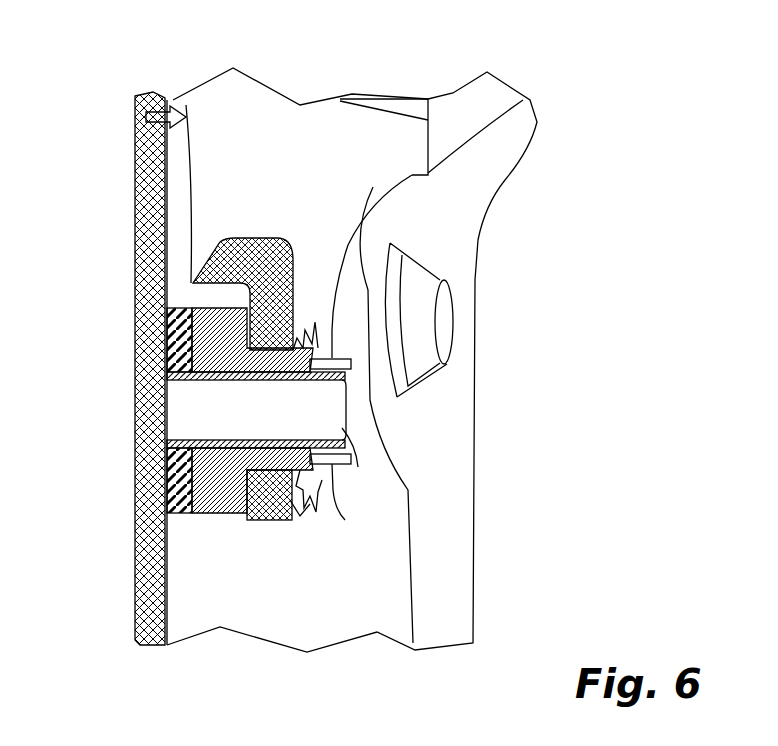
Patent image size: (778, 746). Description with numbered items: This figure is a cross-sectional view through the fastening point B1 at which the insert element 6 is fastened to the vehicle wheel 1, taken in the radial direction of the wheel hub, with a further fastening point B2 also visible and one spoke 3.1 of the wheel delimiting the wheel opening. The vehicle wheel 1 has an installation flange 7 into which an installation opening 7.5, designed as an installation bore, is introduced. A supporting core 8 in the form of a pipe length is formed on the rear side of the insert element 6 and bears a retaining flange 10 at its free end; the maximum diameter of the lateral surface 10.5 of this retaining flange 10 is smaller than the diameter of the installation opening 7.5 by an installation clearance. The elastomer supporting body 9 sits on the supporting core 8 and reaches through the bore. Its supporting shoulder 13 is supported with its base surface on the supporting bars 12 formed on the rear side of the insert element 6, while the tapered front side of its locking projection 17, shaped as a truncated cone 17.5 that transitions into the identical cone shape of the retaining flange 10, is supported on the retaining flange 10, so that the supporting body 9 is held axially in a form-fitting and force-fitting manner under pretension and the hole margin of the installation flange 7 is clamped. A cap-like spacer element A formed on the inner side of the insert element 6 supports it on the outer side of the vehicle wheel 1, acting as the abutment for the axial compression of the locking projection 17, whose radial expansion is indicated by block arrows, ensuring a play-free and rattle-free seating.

The vehicle wheel 1 is at (536, 80).
The insert element 6 is at (126, 296).
The supporting bars 12 is at (181, 305).
The supporting shoulder 13 is at (208, 516).
The locking projection 17 is at (296, 330).
The retaining flange 10 is at (319, 348).
The truncated cone 17.5 is at (428, 258).
The fastening point B2 is at (446, 283).
The spoke 3.1 is at (438, 540).
The supporting core 8 is at (228, 382).
The installation flange 7 is at (300, 502).
The installation opening 7.5 is at (265, 525).
The supporting body 9 is at (238, 522).
The fastening point B1 is at (342, 468).
The lateral surface 10.5 is at (302, 465).
The spacer element A is at (178, 100).